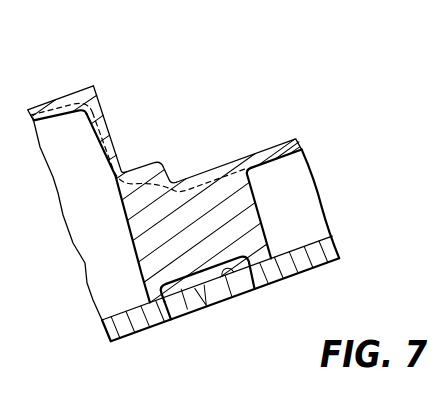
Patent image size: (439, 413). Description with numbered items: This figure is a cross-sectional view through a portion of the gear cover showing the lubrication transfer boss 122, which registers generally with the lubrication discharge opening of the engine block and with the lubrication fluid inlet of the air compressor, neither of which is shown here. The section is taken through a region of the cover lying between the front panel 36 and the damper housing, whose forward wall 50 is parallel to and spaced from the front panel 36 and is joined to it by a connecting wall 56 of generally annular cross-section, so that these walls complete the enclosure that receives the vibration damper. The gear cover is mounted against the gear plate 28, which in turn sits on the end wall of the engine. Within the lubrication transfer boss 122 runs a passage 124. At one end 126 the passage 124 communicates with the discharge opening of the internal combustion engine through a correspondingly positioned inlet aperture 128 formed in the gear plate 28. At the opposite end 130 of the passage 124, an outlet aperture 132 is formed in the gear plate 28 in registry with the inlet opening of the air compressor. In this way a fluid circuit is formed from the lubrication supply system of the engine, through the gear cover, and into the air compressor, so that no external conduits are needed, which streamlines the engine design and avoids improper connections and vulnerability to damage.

The gear plate 28 is at (300, 268).
The front panel 36 is at (257, 158).
The forward wall 50 is at (61, 103).
The connecting wall 56 is at (105, 130).
The lubrication transfer boss 122 is at (198, 198).
The passage 124 is at (247, 248).
The end of passage 126 is at (158, 286).
The inlet aperture 128 is at (182, 314).
The opposite end of passage 130 is at (218, 294).
The outlet aperture 132 is at (254, 290).